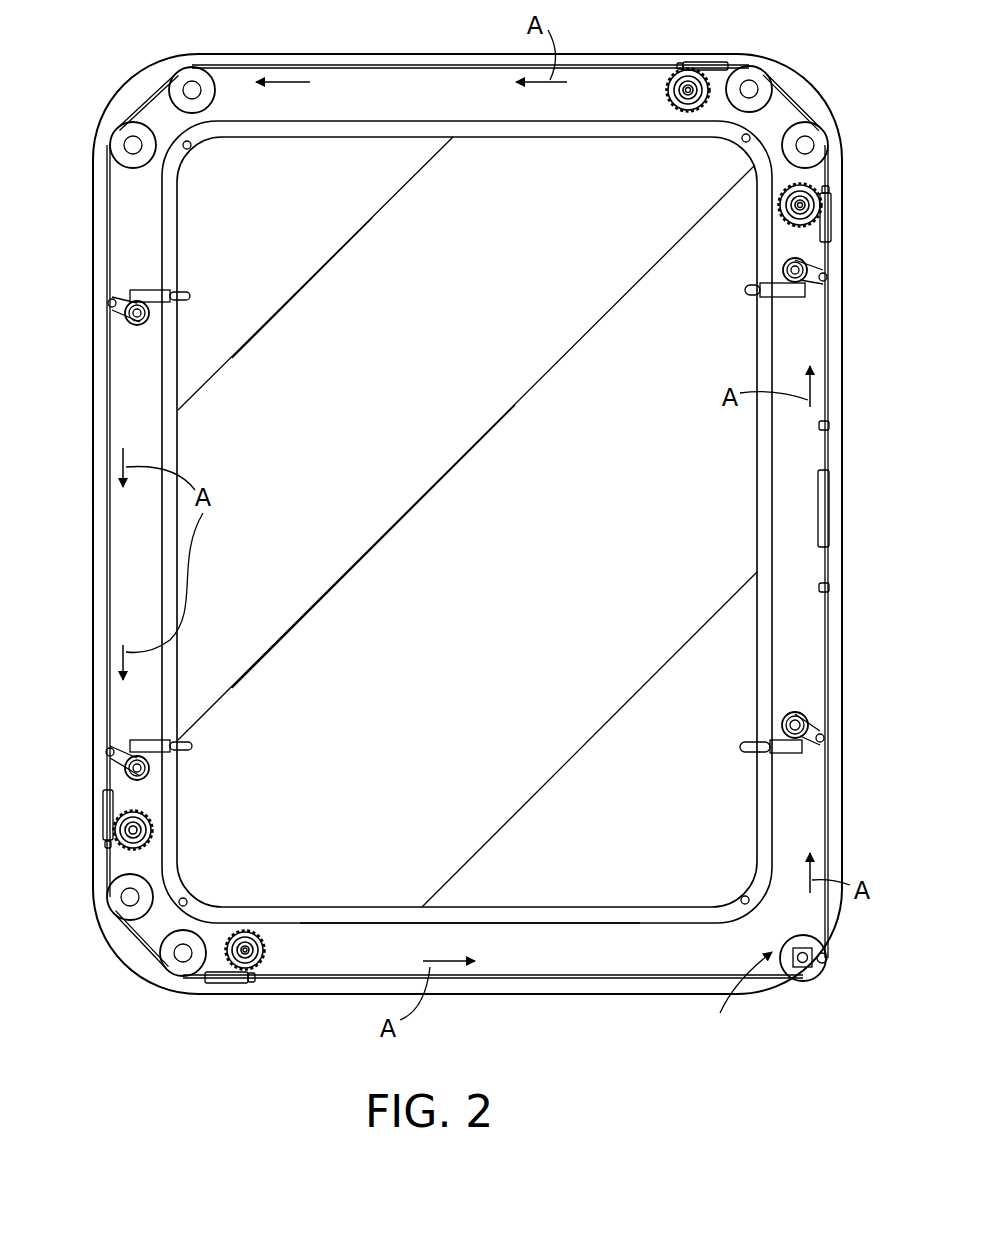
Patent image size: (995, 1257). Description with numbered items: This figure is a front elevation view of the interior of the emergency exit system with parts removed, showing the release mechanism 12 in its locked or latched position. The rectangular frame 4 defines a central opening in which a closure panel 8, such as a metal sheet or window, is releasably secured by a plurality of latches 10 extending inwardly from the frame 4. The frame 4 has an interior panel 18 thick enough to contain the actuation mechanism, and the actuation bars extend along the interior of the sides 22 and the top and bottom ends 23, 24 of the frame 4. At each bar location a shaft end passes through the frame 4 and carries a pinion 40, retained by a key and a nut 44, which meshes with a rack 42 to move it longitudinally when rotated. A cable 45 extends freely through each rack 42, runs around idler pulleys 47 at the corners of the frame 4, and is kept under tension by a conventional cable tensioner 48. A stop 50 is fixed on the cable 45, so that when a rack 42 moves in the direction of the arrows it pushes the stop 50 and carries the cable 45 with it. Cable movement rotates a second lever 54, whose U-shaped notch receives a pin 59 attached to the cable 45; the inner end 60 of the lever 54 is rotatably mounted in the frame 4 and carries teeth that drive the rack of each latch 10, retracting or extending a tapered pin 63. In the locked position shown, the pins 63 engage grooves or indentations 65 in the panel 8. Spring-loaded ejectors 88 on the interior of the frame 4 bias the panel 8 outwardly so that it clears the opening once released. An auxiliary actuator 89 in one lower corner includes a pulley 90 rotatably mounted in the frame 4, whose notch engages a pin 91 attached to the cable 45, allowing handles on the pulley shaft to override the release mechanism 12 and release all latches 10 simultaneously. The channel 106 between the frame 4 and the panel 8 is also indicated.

The frame 4 is at (637, 993).
The closure panel 8 is at (490, 500).
The latch 10 is at (468, 532).
The release mechanism 12 is at (862, 147).
The interior panel 18 is at (487, 995).
The sides 22 is at (132, 582).
The top end 23 is at (435, 88).
The bottom end 24 is at (568, 948).
The pinion 40 is at (683, 82).
The rack 42 is at (712, 63).
The nut 44 is at (686, 96).
The cable 45 is at (107, 487).
The idler pulley 47 is at (117, 140).
The cable tensioner 48 is at (830, 505).
The stop 50 is at (679, 63).
The second lever 54 is at (122, 312).
The pin 59 is at (108, 300).
The inner end of lever 60 is at (150, 315).
The pin 63 is at (173, 738).
The grooves or indentations 65 is at (192, 296).
The ejector 88 is at (190, 148).
The auxiliary actuator 89 is at (734, 998).
The pulley 90 is at (815, 970).
The pin 91 is at (828, 962).
The frame channel 106 is at (340, 128).